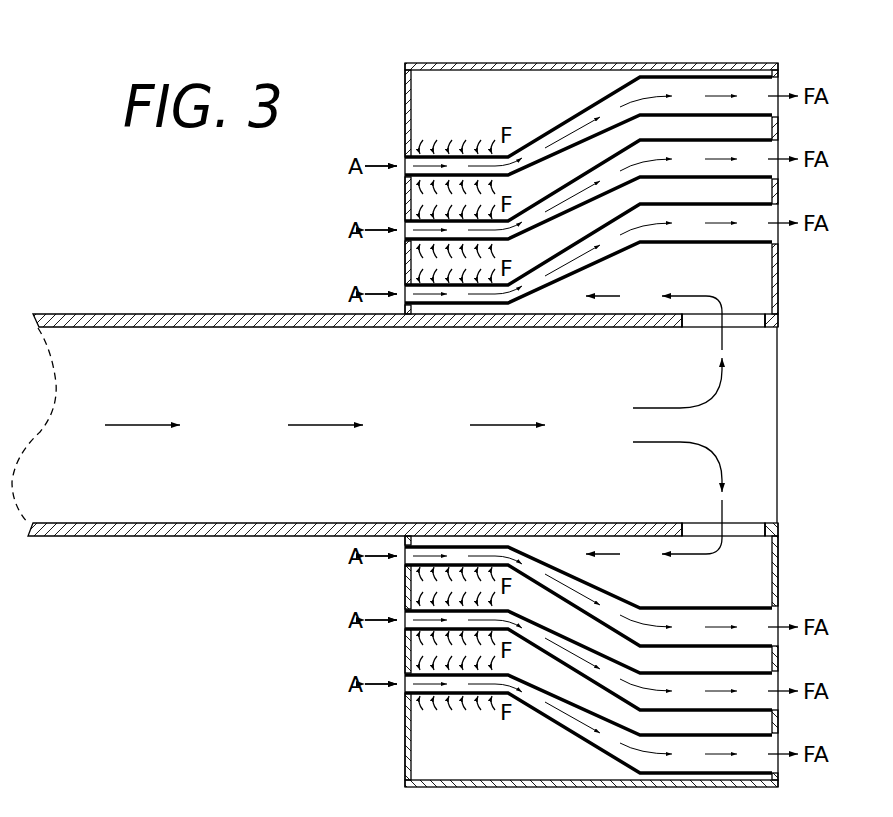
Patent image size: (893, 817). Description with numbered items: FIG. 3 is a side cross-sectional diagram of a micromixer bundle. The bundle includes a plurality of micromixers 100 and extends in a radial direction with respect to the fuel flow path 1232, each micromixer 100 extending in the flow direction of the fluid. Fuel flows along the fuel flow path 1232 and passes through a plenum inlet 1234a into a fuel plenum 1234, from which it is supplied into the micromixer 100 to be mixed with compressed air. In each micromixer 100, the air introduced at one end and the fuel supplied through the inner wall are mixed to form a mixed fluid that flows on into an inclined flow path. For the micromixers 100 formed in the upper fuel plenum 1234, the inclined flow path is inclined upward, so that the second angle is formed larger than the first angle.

The micromixer 100 is at (539, 122).
The fuel flow path 1232 is at (156, 357).
The fuel plenum 1234 is at (547, 98).
The plenum inlet 1234a is at (736, 321).